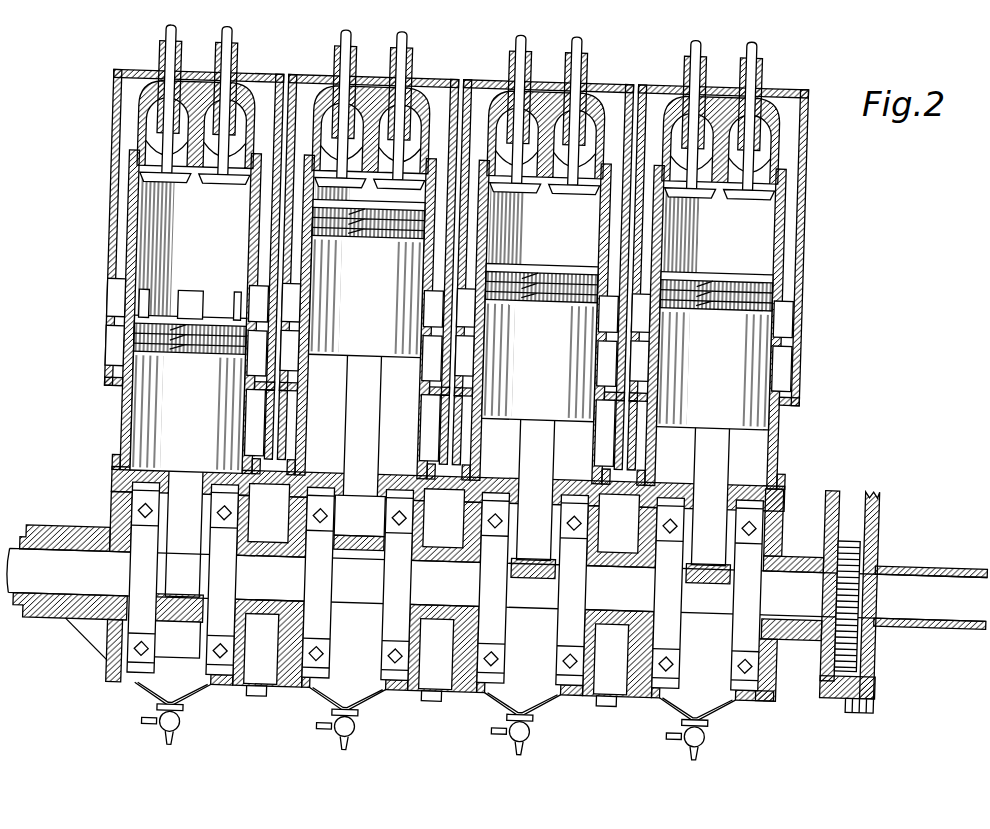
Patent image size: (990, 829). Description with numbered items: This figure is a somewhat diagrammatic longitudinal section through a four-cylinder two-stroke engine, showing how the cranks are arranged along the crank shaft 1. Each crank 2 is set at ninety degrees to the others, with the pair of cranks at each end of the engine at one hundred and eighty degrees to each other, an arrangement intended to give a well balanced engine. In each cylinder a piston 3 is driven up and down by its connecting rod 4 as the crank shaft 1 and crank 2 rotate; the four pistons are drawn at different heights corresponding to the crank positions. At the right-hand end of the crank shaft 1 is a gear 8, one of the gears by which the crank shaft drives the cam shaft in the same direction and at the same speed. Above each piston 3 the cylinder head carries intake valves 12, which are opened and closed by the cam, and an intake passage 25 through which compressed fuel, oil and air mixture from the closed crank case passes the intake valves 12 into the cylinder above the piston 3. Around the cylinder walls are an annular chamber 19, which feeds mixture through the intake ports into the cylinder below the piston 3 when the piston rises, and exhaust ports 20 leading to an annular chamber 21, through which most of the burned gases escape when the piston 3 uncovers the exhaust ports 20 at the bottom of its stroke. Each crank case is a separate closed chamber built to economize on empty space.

The crank shaft 1 is at (496, 584).
The crank 2 is at (445, 586).
The piston 3 is at (132, 410).
The connecting rod 4 is at (181, 540).
The gear 8 is at (836, 654).
The intake valve 12 is at (287, 720).
The annular chamber 19 is at (103, 357).
The exhaust ports 20 is at (232, 292).
The annular chamber 21 is at (252, 283).
The intake passage 25 is at (141, 124).